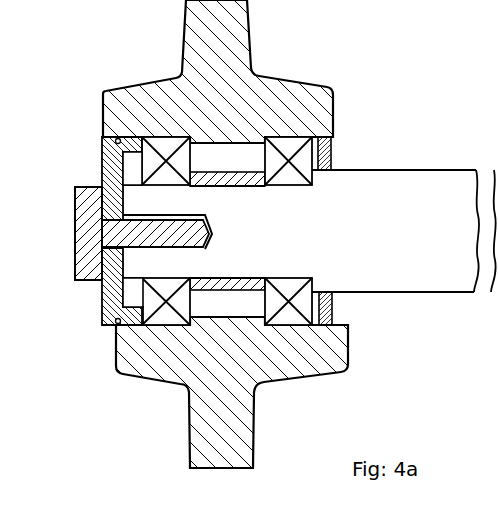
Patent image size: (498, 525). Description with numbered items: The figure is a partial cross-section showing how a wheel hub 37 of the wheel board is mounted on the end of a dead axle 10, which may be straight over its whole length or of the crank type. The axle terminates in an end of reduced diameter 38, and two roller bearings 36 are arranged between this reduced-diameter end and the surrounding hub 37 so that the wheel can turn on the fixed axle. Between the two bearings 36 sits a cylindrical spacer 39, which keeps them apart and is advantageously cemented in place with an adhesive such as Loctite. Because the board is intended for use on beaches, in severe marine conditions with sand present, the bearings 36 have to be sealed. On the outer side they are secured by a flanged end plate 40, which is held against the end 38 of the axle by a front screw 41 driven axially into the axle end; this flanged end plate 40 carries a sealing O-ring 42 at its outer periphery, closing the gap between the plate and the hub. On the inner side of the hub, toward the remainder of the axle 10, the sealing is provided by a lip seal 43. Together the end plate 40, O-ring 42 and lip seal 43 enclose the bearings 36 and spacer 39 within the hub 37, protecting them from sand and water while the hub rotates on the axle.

The dead axle 10 is at (446, 170).
The roller bearings 36 is at (102, 92).
The wheel hub 37 is at (223, 58).
The end of reduced diameter 38 is at (272, 236).
The cylindrical spacer 39 is at (243, 282).
The flanged end plate 40 is at (100, 168).
The front screw 41 is at (80, 270).
The sealing O-ring 42 is at (107, 325).
The lip seal 43 is at (345, 312).